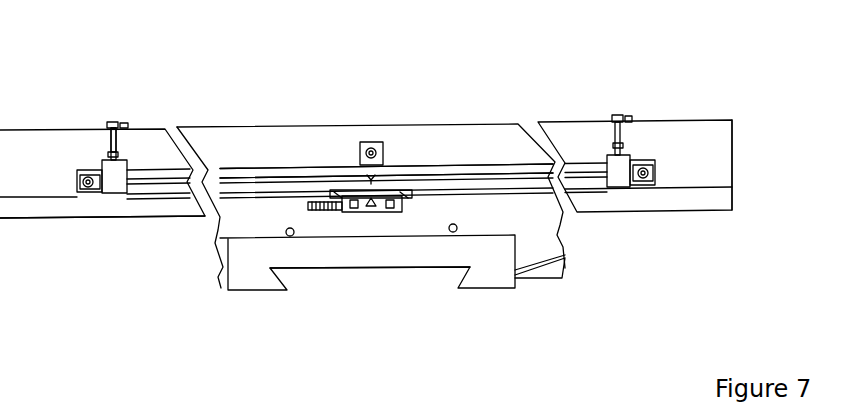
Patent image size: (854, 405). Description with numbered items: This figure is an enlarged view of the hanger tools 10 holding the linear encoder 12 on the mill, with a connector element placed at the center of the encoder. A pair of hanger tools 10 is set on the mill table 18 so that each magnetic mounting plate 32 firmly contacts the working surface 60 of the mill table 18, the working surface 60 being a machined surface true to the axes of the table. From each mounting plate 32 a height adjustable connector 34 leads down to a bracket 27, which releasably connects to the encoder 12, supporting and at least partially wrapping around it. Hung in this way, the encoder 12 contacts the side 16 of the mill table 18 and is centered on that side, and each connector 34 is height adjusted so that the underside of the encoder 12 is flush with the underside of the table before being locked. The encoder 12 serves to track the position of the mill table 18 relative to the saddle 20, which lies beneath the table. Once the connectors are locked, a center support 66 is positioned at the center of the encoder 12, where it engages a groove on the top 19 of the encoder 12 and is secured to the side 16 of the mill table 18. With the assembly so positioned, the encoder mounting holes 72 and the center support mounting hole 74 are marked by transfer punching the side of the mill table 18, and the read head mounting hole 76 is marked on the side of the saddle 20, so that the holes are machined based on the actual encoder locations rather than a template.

The hanger tool 10 is at (108, 213).
The linear encoder 12 is at (497, 160).
The side 16 is at (713, 147).
The mill table 18 is at (733, 160).
The top 19 is at (270, 157).
The saddle 20 is at (557, 240).
The bracket 27 is at (102, 160).
The mounting plate 32 is at (107, 124).
The height adjustable connector 34 is at (122, 141).
The working surface 60 is at (237, 122).
The center support 66 is at (383, 148).
The encoder mounting holes 72 is at (103, 186).
The center support mounting hole 74 is at (363, 192).
The read head mounting hole 76 is at (380, 210).